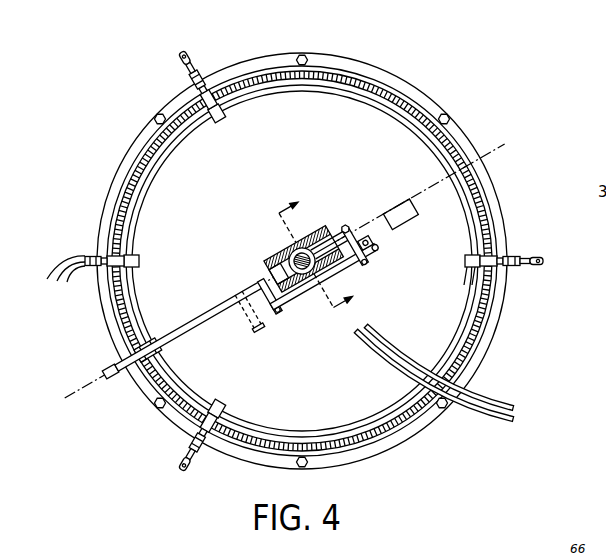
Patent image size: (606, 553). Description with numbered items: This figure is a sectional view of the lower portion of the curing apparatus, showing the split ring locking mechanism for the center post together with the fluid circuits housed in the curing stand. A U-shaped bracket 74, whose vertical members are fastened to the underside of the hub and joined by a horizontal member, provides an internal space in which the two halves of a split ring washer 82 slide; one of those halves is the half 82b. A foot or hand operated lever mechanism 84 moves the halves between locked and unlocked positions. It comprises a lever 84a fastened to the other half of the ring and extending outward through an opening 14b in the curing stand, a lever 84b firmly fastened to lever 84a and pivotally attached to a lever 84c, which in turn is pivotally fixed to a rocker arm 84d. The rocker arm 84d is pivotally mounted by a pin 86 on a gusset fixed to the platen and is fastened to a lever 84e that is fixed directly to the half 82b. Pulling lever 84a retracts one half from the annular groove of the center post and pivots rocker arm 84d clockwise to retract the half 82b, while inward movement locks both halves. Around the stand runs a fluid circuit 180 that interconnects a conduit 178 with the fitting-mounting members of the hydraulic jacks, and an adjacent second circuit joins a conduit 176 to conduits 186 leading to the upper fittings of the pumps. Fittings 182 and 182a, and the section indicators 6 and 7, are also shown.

The section line 6- 6 is at (50, 373).
The section line 7- 7 is at (324, 246).
The opening 14b is at (134, 343).
The U-shaped bracket 74 is at (310, 245).
The split ring washer 82 is at (302, 261).
The half of split ring 82b is at (329, 245).
The lever mechanism 84 is at (264, 299).
The lever 84a is at (190, 325).
The lever 84b is at (258, 306).
The lever 84c is at (323, 277).
The rocker arm 84d is at (361, 241).
The lever 84e is at (400, 220).
The pin 86 is at (365, 243).
The conduit 176 is at (60, 256).
The conduit 178 is at (73, 278).
The fluid circuit 180 is at (139, 311).
The fitting 182 is at (200, 70).
The fitting 182a is at (279, 273).
The conduits 186 is at (182, 63).